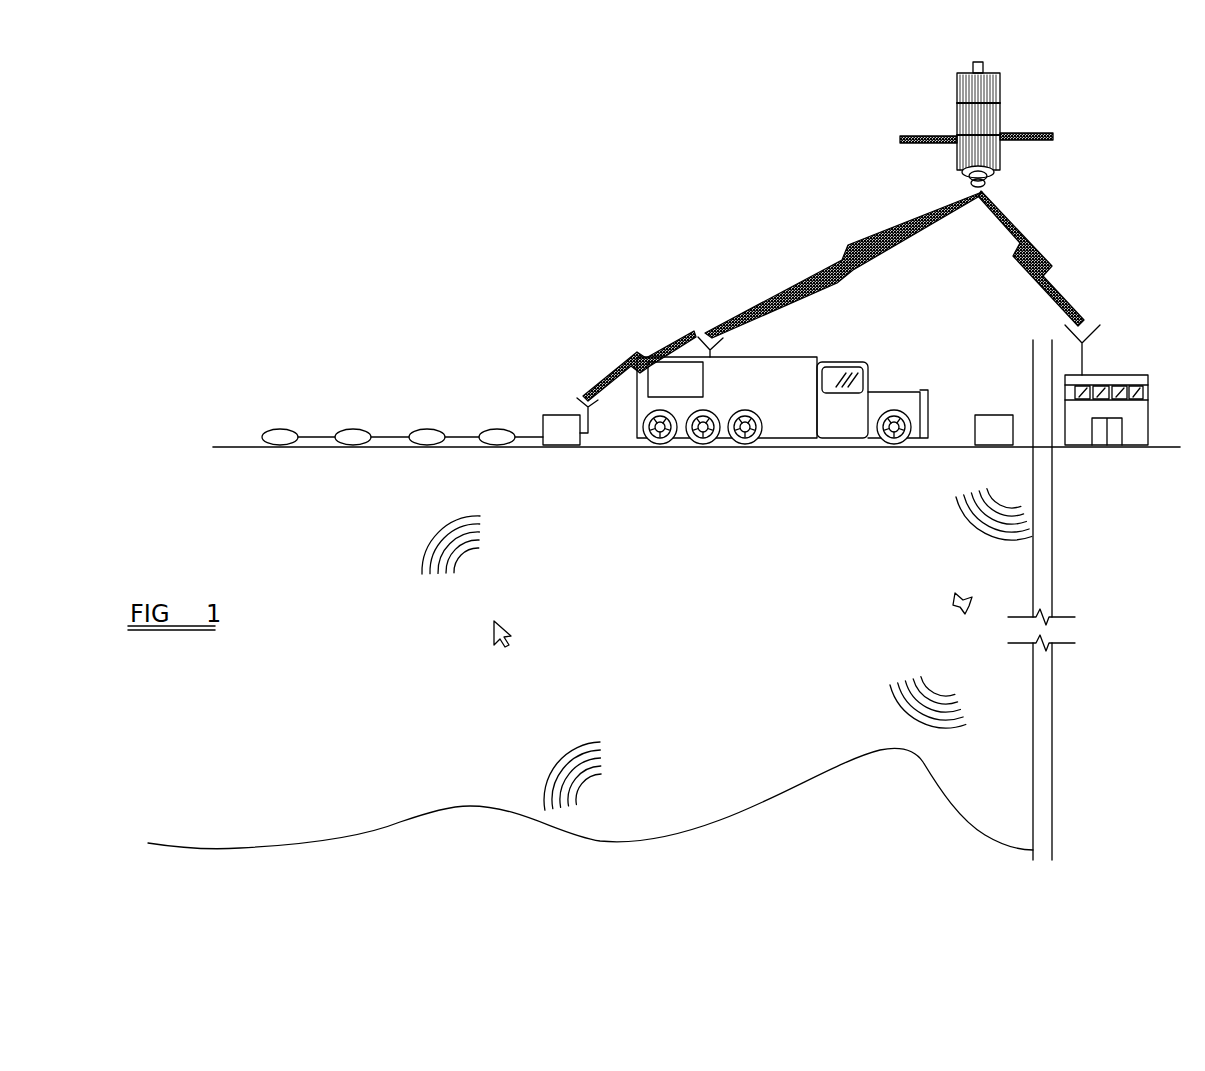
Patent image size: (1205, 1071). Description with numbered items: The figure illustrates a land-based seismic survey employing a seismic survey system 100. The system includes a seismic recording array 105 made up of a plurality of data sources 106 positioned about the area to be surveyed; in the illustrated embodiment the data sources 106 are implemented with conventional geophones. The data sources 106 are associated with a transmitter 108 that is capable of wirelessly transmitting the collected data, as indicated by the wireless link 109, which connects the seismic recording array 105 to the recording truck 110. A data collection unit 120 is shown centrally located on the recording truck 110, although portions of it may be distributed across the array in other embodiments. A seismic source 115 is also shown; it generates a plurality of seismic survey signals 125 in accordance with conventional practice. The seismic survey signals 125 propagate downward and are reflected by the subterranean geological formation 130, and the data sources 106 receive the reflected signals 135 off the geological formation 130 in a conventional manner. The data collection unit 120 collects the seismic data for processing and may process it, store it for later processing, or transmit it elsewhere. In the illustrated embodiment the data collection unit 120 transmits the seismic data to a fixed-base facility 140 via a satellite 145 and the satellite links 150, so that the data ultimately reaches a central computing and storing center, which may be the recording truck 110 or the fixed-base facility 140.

The seismic survey system 100 is at (462, 194).
The seismic recording array 105 is at (244, 320).
The data sources 106 is at (497, 429).
The transmitter 108 is at (560, 415).
The wireless link 109 is at (625, 385).
The recording truck 110 is at (786, 338).
The seismic source 115 is at (993, 415).
The data collection unit 120 is at (678, 372).
The seismic survey signals 125 is at (950, 538).
The subterranean geological formation 130 is at (933, 762).
The reflected signals 135 is at (482, 574).
The fixed-base facility 140 is at (1110, 452).
The satellite 145 is at (957, 103).
The satellite links 150 is at (840, 257).